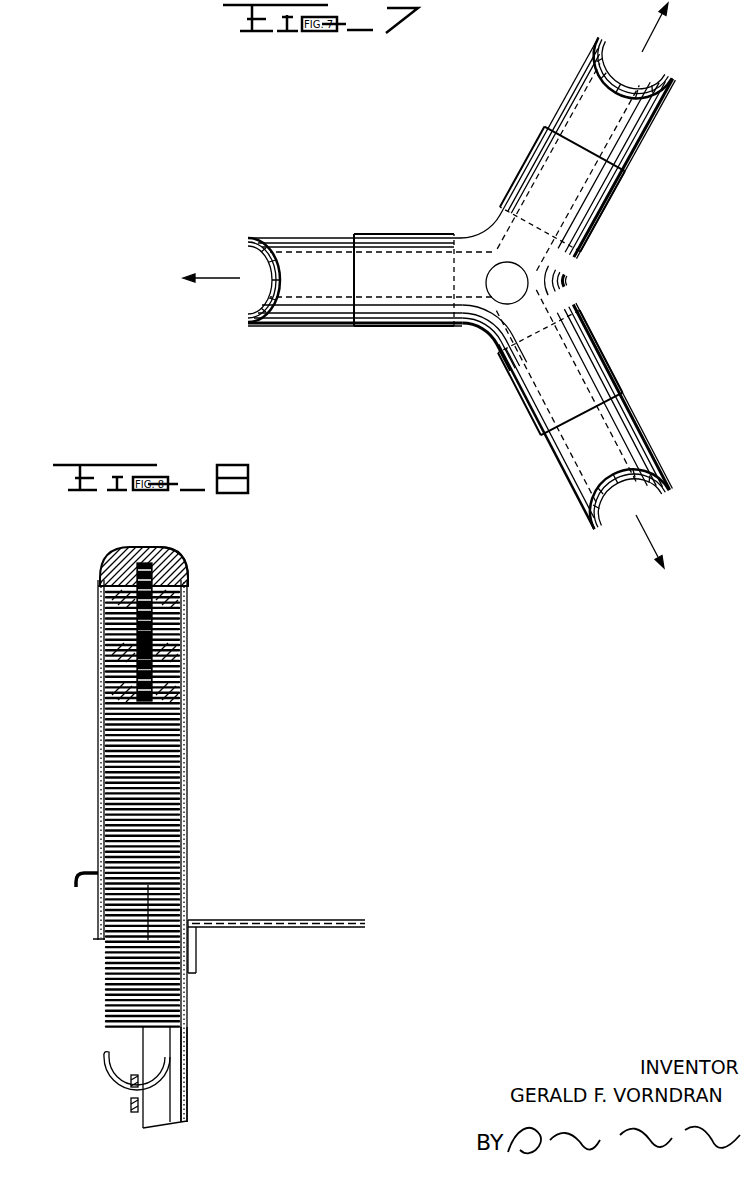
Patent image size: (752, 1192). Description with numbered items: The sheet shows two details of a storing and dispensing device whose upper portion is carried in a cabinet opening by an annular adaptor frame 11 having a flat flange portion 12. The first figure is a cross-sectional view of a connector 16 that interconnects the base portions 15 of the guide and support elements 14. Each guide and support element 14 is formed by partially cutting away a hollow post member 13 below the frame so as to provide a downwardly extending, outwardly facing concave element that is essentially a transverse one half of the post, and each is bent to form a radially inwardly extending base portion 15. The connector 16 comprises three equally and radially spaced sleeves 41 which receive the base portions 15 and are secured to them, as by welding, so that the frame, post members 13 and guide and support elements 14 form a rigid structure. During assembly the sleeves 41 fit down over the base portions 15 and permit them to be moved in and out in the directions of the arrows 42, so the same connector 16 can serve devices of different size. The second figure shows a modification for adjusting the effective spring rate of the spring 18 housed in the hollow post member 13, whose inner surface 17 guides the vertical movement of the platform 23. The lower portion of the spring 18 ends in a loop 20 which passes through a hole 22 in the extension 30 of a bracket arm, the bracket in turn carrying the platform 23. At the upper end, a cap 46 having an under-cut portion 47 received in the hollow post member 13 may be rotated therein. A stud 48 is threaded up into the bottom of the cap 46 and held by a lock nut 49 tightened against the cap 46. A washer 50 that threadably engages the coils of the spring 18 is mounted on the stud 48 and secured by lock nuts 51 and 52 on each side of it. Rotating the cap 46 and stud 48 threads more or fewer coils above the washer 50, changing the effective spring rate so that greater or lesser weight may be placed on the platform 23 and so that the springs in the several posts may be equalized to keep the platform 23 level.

In FIG. 8, the adaptor frame 11 is at (148, 885).
In FIG. 8, the flat flange portion 12 is at (92, 872).
In FIG. 8, the hollow post member 13 is at (187, 690).
In FIG. 7, the guide and support element 14 is at (626, 83).
In FIG. 8, the guide and support element 14 is at (153, 1108).
In FIG. 7, the base portion 15 is at (575, 87).
In FIG. 7, the connector 16 is at (526, 252).
In FIG. 8, the inner surface 17 is at (187, 1062).
In FIG. 8, the spring 18 is at (163, 754).
In FIG. 8, the loop 20 is at (103, 1059).
In FIG. 8, the hole 22 is at (131, 1097).
In FIG. 8, the platform 23 is at (260, 920).
In FIG. 8, the extension 30 is at (132, 1109).
In FIG. 7, the sleeve 41 is at (526, 158).
In FIG. 7, the arrow 42 is at (662, 22).
In FIG. 8, the cap 46 is at (145, 548).
In FIG. 8, the under-cut portion 47 is at (182, 574).
In FIG. 8, the stud 48 is at (177, 608).
In FIG. 8, the lock nut 49 is at (101, 578).
In FIG. 8, the washer 50 is at (102, 663).
In FIG. 8, the lock nut 51 is at (102, 631).
In FIG. 8, the lock nut 52 is at (102, 681).